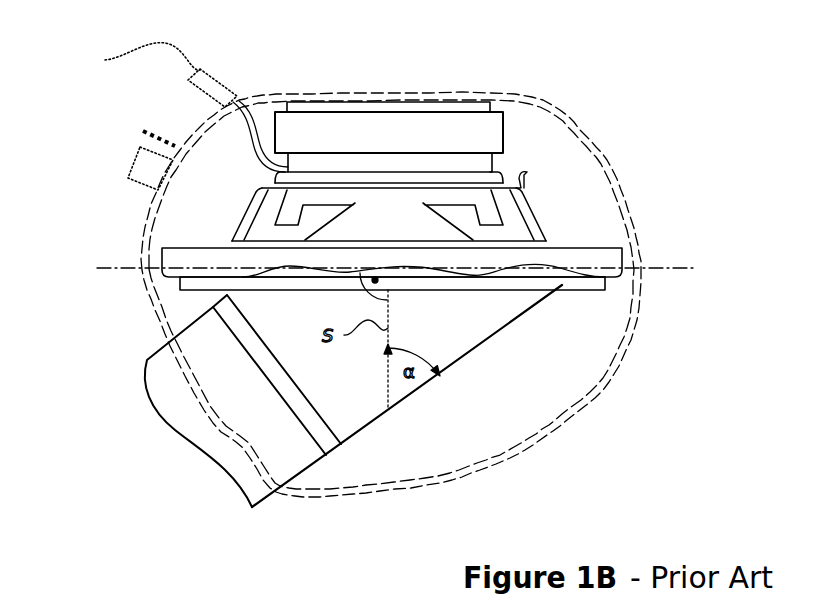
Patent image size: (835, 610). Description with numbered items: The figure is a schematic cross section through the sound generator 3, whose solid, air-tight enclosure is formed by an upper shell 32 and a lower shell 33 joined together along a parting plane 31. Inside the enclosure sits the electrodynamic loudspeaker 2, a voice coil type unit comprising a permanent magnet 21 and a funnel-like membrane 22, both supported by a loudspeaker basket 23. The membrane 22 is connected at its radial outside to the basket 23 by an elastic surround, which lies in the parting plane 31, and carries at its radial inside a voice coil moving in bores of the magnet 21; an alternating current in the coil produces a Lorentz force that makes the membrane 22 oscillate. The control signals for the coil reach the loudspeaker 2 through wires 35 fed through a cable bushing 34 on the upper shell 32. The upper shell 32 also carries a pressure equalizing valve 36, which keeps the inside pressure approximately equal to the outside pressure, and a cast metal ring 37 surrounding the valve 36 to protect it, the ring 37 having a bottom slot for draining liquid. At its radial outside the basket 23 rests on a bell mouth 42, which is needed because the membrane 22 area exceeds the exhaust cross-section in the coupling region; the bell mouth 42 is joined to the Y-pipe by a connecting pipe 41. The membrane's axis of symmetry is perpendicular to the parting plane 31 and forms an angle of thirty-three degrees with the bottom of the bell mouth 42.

The loudspeaker 2 is at (352, 128).
The sound generator 3 is at (440, 294).
The permanent magnet 21 is at (335, 140).
The membrane 22 is at (423, 225).
The loudspeaker basket 23 is at (523, 178).
The parting plane 31 is at (645, 268).
The upper shell 32 is at (603, 162).
The lower shell 33 is at (557, 428).
The cable bushing 34 is at (201, 67).
The wires 35 is at (245, 163).
The pressure equalizing valve 36 is at (130, 178).
The cast metal ring 37 is at (143, 132).
The connecting pipe 41 is at (175, 421).
The bell mouth 42 is at (413, 392).